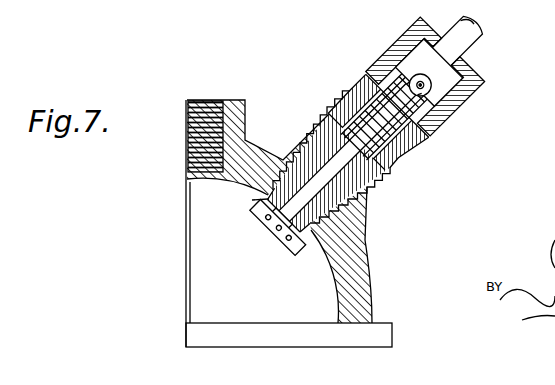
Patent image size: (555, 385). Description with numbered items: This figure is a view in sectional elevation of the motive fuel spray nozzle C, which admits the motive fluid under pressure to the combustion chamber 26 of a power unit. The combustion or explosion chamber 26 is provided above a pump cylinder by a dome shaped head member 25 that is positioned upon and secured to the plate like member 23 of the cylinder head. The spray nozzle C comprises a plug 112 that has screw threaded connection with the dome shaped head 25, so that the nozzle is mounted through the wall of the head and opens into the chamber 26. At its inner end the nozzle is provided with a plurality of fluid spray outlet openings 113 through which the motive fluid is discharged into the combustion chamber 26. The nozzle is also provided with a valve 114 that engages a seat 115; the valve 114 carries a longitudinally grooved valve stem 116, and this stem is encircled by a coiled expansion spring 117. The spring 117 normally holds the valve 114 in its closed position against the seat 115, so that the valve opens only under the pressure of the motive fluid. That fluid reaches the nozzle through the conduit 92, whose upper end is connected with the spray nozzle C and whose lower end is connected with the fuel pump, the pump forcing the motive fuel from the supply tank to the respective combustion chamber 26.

The plate like member 23 is at (386, 336).
The dome shaped head member 25 is at (249, 151).
The combustion chamber 26 is at (204, 223).
The conduit 92 is at (444, 58).
The plug 112 is at (341, 161).
The fluid spray outlet openings 113 is at (278, 228).
The valve 114 is at (327, 225).
The seat 115 is at (252, 200).
The valve stem 116 is at (346, 155).
The coiled expansion spring 117 is at (384, 117).
The spray nozzle C is at (425, 76).